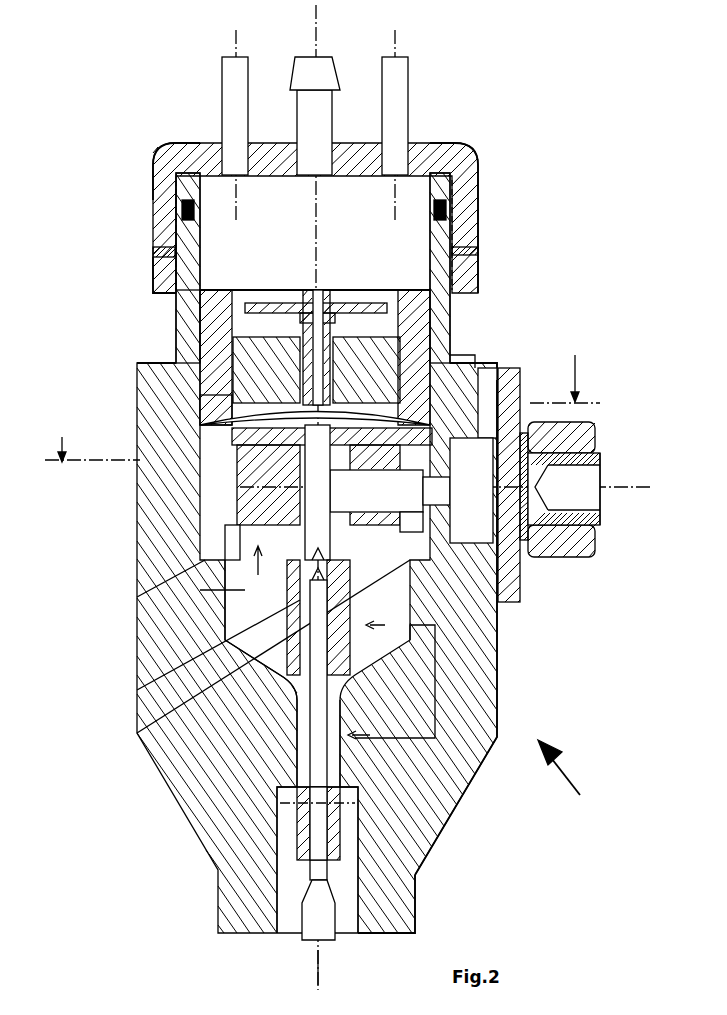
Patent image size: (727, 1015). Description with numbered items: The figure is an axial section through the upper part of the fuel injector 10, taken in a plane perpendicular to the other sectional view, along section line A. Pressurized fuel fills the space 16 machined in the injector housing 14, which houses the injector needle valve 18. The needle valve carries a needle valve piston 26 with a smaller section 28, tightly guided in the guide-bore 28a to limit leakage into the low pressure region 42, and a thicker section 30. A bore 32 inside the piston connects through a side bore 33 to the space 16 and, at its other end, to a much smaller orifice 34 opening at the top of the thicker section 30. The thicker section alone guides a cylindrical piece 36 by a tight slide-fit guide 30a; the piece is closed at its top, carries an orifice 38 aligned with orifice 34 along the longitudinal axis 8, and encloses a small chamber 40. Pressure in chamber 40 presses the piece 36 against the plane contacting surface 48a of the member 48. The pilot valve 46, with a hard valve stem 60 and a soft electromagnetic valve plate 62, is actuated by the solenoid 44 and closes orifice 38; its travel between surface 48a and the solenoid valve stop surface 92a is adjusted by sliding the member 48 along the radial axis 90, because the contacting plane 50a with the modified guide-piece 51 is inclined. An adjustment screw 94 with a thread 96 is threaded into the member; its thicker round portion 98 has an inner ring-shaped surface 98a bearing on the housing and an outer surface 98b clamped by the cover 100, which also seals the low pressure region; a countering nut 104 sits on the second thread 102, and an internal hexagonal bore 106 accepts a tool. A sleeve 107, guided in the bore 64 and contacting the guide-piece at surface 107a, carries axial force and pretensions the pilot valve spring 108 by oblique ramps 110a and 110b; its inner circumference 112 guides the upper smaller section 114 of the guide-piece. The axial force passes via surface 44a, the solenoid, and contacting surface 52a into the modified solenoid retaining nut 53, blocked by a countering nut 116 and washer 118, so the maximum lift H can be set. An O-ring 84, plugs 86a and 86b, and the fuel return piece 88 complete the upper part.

The longitudinal axis 8 is at (318, 973).
The injector 10 is at (571, 783).
The injector housing 14 is at (240, 866).
The space or chamber 16 is at (290, 915).
The injector needle valve 18 is at (325, 940).
The needle valve piston 26 is at (436, 675).
The section with smaller outer diameter 28 is at (308, 762).
The guide-bore 28a is at (385, 785).
The thicker section 30 is at (290, 640).
The tight slide-fit guide 30a is at (362, 610).
The bore 32 is at (300, 805).
The side bore 33 is at (420, 880).
The orifice 34 is at (225, 598).
The cylindrical piece 36 is at (292, 690).
The orifice 38 is at (375, 501).
The small space or chamber 40 is at (410, 555).
The low pressure region 42 is at (232, 575).
The solenoid 44 is at (205, 262).
The contacting surface 44a is at (214, 292).
The pilot or solenoid valve 46 is at (294, 376).
The member 48 is at (237, 497).
The plane contacting surface 48a is at (238, 545).
The contacting surface 50a is at (200, 446).
The modified guide-piece 51 is at (232, 436).
The contacting surface 52a is at (205, 175).
The modified solenoid retaining nut 53 is at (162, 178).
The valve stem 60 is at (345, 372).
The valve plate 62 is at (280, 302).
The bore 64 is at (176, 305).
The O-ring 84 is at (453, 192).
The plug 86a is at (235, 67).
The plug 86b is at (400, 70).
The fuel return piece 88 is at (305, 72).
The axis 90 is at (645, 487).
The solenoid valve stop surface 92a is at (326, 292).
The adjustment screw 94 is at (500, 602).
The thread 96 is at (434, 551).
The thicker round portion 98 is at (505, 368).
The inner planar ring-shaped surface 98a is at (460, 356).
The outer planar surface 98b is at (473, 455).
The cover 100 is at (522, 572).
The second thread 102 is at (596, 426).
The countering nut 104 is at (590, 540).
The internal hexagonal bore 106 is at (590, 470).
The sleeve 107 is at (205, 373).
The contacting surface 107a is at (205, 413).
The pilot valve spring 108 is at (452, 268).
The ramp or surface 110a is at (210, 420).
The ramp or surface 110b is at (450, 345).
The inner circumference 112 is at (478, 215).
The upper smaller section 114 is at (215, 340).
The countering nut 116 is at (153, 285).
The washer 118 is at (158, 252).
The section line A is at (320, 408).
The maximum possible lift H is at (221, 574).